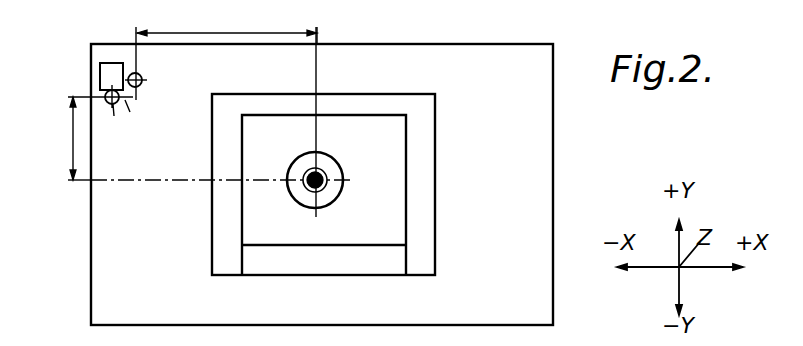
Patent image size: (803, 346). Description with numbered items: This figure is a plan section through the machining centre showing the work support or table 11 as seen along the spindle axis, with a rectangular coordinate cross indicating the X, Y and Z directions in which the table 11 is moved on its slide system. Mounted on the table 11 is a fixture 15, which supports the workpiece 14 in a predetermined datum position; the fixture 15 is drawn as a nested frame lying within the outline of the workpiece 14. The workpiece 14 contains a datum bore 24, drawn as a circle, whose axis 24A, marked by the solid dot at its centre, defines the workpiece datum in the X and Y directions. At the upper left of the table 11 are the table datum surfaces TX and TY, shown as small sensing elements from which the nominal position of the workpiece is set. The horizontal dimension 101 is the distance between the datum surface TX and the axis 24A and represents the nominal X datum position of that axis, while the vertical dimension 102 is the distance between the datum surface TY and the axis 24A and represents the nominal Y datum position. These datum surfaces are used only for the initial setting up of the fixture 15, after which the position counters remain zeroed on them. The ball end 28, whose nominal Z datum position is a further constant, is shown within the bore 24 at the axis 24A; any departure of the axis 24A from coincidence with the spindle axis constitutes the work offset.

The table 11 is at (553, 108).
The workpiece 14 is at (398, 162).
The fixture 15 is at (440, 198).
The datum bore 24 is at (296, 163).
The axis of datum bore 24A is at (323, 174).
The ball end 28 is at (330, 192).
The nominal X datum position 101 is at (226, 55).
The nominal Y datum position 102 is at (73, 150).
The table datum surface in X TX is at (130, 72).
The table datum surface in Y TY is at (129, 118).